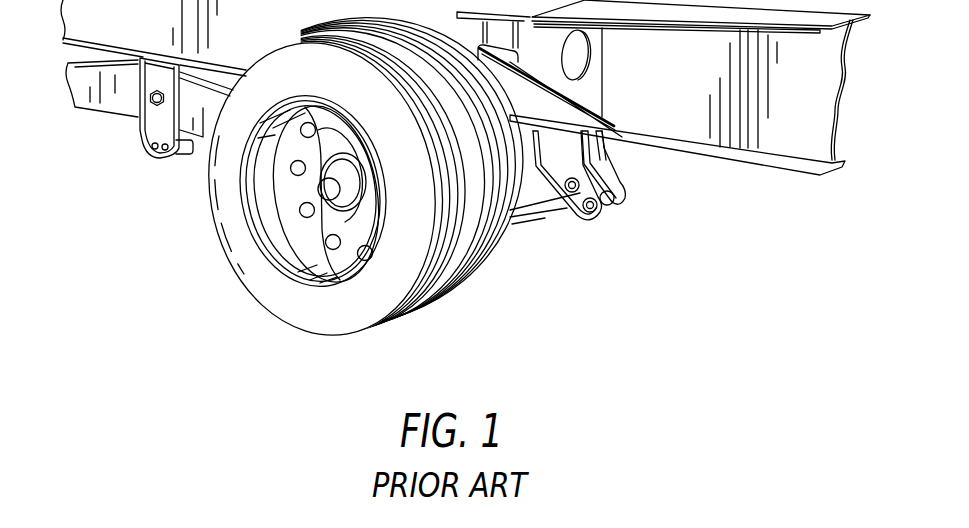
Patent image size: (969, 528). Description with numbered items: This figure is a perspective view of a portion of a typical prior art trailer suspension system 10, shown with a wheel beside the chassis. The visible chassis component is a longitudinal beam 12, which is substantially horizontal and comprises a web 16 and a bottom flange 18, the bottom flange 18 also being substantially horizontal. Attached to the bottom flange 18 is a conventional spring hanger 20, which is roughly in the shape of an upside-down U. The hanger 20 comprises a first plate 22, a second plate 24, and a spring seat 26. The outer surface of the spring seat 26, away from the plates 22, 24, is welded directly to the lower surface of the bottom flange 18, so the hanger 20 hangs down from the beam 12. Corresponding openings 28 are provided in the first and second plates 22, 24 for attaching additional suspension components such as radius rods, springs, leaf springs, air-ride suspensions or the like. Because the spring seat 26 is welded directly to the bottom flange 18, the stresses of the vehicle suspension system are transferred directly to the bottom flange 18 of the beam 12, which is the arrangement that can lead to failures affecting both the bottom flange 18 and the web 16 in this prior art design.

The trailer suspension system 10 is at (726, 324).
The longitudinal beam 12 is at (812, 143).
The web 16 is at (677, 92).
The bottom flange 18 is at (745, 160).
The spring hanger 20 is at (562, 178).
The first plate 22 is at (558, 157).
The second plate 24 is at (605, 180).
The spring seat 26 is at (593, 143).
The openings 28 is at (571, 192).